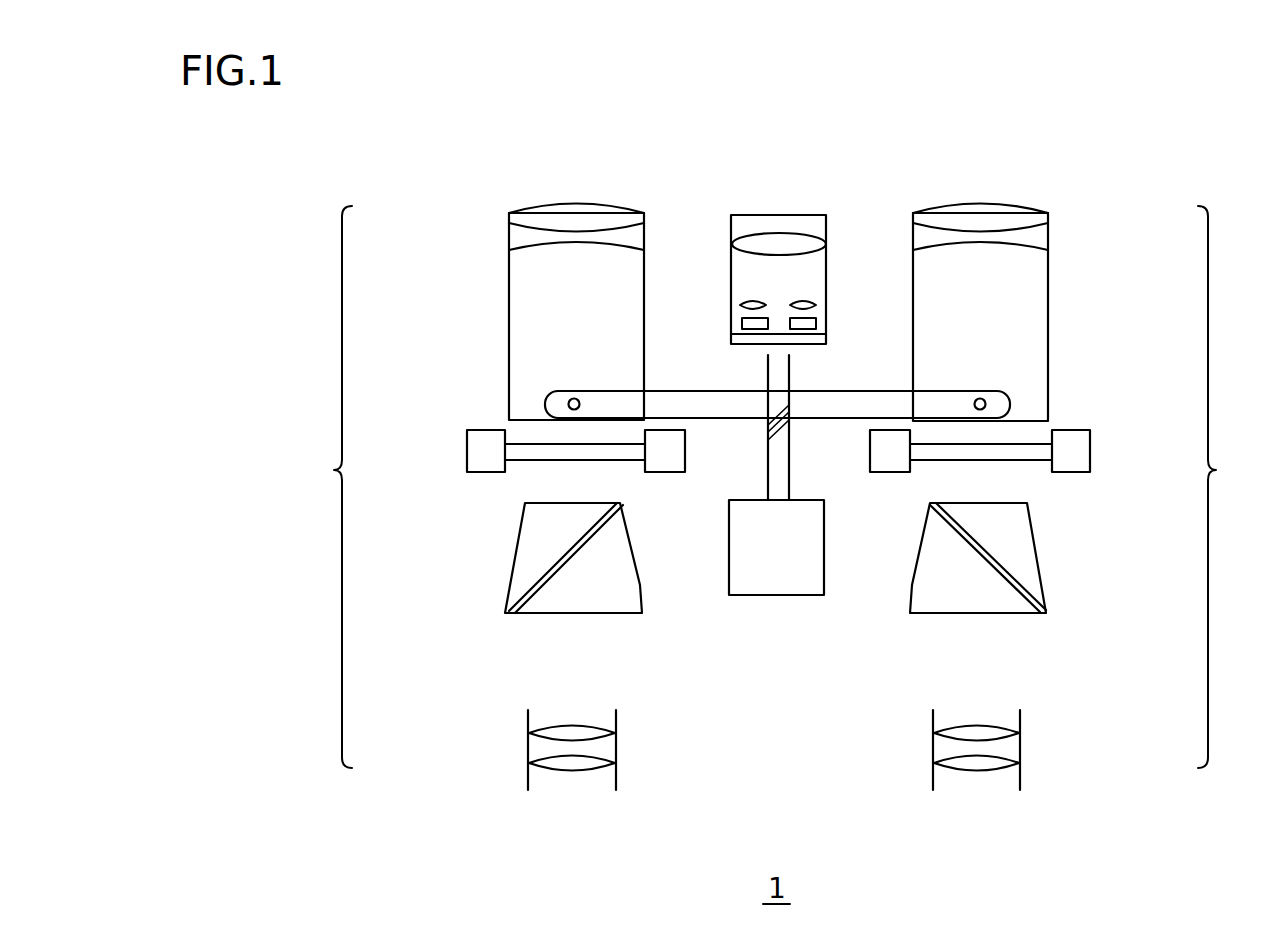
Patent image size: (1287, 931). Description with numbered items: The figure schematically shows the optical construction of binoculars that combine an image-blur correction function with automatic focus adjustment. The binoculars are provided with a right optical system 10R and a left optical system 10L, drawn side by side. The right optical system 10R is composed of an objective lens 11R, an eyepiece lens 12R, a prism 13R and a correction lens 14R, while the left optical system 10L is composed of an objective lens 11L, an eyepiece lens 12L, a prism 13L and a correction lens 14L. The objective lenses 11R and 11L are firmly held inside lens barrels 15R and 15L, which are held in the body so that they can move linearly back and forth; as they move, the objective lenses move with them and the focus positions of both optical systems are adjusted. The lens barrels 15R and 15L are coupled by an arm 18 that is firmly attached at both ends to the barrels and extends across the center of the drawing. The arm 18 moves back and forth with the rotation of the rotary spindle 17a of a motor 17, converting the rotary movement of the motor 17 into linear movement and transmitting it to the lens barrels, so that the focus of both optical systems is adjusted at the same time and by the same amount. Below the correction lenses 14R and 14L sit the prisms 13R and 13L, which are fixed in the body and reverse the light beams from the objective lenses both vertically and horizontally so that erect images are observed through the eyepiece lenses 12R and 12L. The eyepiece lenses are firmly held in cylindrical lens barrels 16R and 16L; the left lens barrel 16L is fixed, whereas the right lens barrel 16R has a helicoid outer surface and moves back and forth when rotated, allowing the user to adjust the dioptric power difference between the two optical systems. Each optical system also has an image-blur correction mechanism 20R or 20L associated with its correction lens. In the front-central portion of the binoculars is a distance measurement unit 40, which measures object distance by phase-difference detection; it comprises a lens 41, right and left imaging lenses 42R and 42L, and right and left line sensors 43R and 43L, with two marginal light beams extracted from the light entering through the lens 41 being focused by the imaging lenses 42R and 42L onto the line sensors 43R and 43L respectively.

The left optical system 10L is at (316, 487).
The right optical system 10R is at (1240, 487).
The left objective lens 11L is at (525, 239).
The right objective lens 11R is at (1040, 240).
The left eyepiece lens 12L is at (555, 729).
The right eyepiece lens 12R is at (998, 728).
The left prism 13L is at (518, 593).
The right prism 13R is at (1036, 590).
The left correction lens 14L is at (553, 455).
The right correction lens 14R is at (1003, 455).
The left lens barrel 15L is at (650, 265).
The right lens barrel 15R is at (912, 292).
The left eyepiece lens barrel 16L is at (616, 750).
The right eyepiece lens barrel 16R is at (933, 750).
The motor 17 is at (777, 598).
The rotary spindle 17a is at (789, 470).
The arm 18 is at (722, 418).
The left image-blur correction mechanism 20L is at (613, 485).
The right image-blur correction mechanism 20R is at (928, 485).
The distance measurement unit 40 is at (733, 280).
The lens 41 is at (775, 245).
The left imaging lens 42L is at (742, 302).
The right imaging lens 42R is at (816, 302).
The left line sensor 43L is at (742, 330).
The right line sensor 43R is at (816, 330).